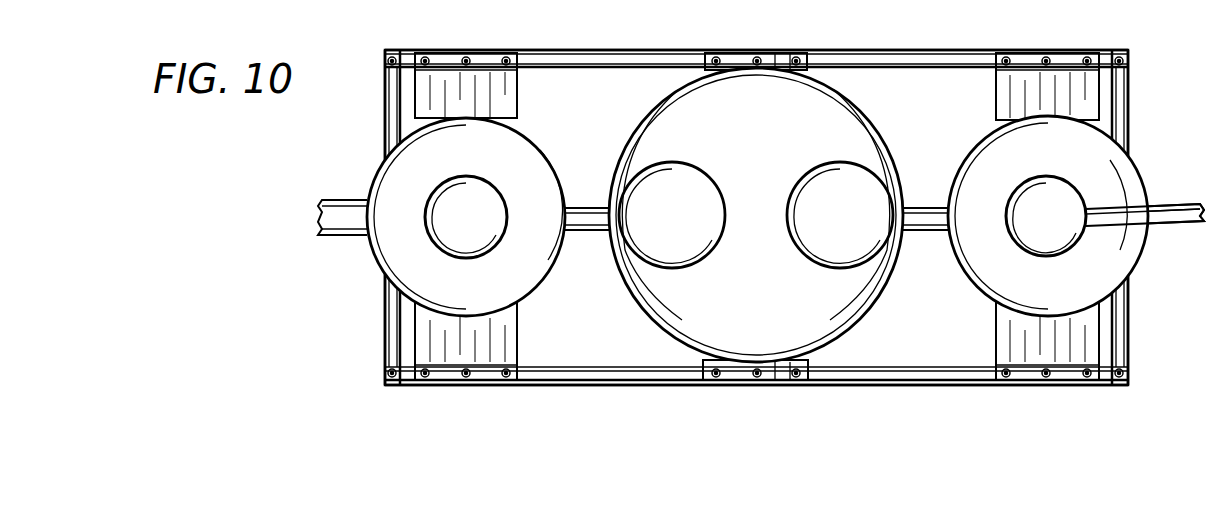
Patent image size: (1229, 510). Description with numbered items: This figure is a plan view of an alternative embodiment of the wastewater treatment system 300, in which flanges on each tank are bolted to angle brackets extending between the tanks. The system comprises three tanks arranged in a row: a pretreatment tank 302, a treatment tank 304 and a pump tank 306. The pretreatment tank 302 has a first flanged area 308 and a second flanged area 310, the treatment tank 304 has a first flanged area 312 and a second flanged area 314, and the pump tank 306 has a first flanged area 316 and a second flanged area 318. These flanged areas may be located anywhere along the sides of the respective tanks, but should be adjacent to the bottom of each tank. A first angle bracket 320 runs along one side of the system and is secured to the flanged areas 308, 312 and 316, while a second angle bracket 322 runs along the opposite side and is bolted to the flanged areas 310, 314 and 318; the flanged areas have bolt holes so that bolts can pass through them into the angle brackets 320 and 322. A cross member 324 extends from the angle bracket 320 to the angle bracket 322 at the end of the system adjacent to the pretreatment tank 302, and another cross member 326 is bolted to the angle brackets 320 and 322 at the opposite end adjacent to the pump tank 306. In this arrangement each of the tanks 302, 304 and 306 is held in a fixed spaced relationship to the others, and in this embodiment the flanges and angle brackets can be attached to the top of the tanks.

The wastewater treatment system 300 is at (361, 366).
The pretreatment tank 302 is at (540, 152).
The treatment tank 304 is at (878, 142).
The pump tank 306 is at (1130, 175).
The first flanged area 308 is at (518, 55).
The second flanged area 310 is at (515, 360).
The first flanged area 312 is at (808, 55).
The second flanged area 314 is at (808, 380).
The first flanged area 316 is at (1071, 60).
The second flanged area 318 is at (1068, 360).
The first angle bracket 320 is at (927, 50).
The second angle bracket 322 is at (905, 374).
The cross member 324 is at (390, 134).
The cross member 326 is at (1124, 108).